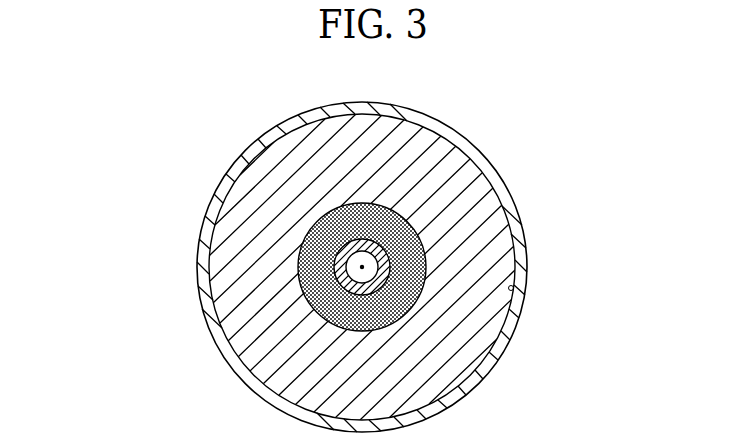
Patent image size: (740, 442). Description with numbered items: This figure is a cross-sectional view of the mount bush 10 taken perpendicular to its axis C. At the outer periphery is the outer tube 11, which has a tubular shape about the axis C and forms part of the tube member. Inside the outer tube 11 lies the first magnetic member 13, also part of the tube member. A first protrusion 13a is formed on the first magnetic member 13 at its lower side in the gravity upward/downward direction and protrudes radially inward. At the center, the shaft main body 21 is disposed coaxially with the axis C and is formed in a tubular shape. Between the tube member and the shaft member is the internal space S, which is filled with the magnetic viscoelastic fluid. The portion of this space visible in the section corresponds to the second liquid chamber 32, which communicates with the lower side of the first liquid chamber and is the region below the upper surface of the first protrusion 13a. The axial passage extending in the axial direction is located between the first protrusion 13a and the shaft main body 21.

The mount bush 10 is at (319, 244).
The outer tube 11 is at (247, 153).
The first magnetic member 13 is at (285, 267).
The first protrusion 13a is at (218, 257).
The shaft main body 21 is at (388, 248).
The second liquid chamber 32 is at (386, 206).
The internal space S is at (332, 252).
The axis C is at (366, 268).